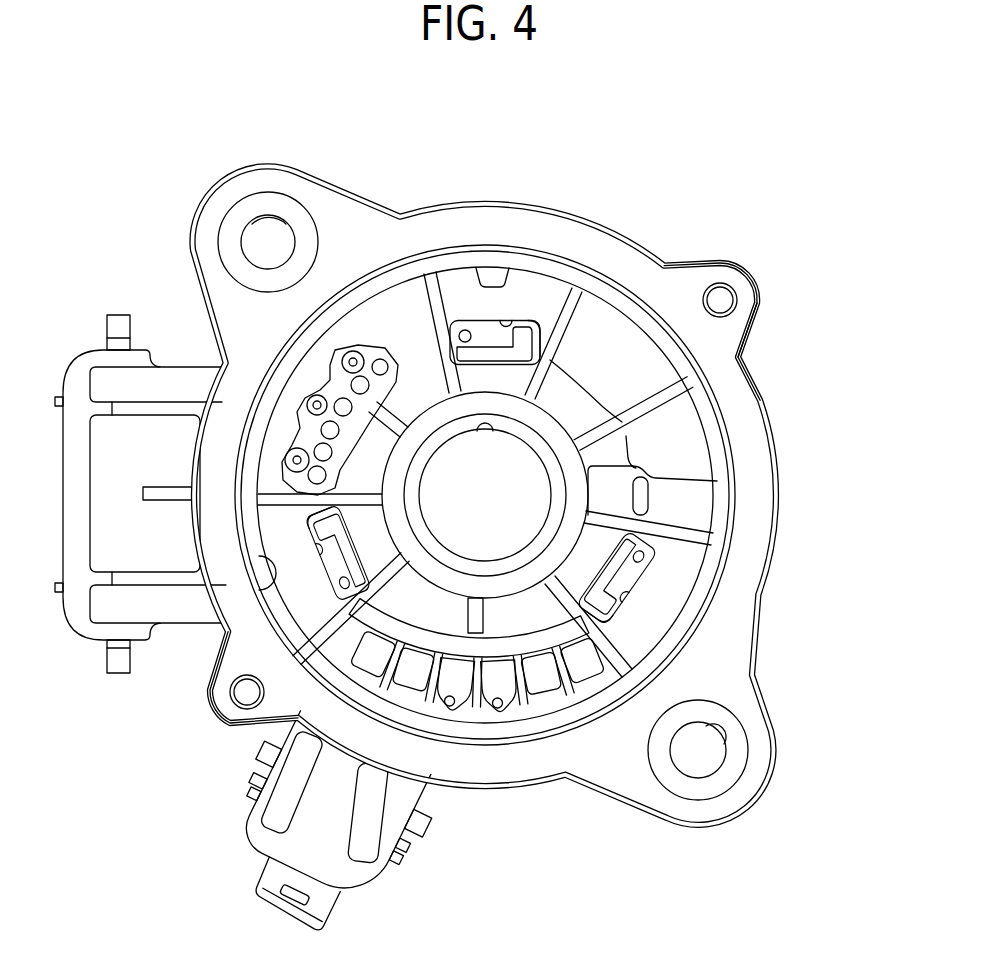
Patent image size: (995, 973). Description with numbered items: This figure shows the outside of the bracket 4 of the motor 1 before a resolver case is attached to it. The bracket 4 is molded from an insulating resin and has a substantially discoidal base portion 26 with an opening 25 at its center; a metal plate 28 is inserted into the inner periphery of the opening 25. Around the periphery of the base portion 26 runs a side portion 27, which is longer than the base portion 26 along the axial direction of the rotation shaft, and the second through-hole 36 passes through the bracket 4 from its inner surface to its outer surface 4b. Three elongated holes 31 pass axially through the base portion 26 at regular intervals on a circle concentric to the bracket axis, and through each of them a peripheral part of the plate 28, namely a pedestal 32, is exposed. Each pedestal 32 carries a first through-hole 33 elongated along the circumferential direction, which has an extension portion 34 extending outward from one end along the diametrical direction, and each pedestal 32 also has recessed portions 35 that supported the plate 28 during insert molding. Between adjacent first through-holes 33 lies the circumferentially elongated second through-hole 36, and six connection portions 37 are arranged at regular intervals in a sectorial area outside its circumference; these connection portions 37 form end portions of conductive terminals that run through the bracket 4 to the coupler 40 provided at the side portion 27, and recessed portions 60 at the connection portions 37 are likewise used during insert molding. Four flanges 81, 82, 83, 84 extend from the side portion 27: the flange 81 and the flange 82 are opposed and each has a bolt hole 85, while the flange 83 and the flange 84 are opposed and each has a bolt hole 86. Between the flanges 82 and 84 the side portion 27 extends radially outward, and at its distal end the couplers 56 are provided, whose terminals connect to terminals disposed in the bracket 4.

The motor 1 is at (455, 532).
The bracket 4 is at (498, 504).
The outer surface 4b is at (667, 378).
The opening 25 is at (485, 495).
The base portion 26 is at (307, 377).
The side portion 27 is at (780, 444).
The metal plate 28 is at (558, 479).
The elongated holes 31 is at (512, 325).
The pedestals 32 is at (493, 330).
The first through-holes 33 is at (450, 333).
The extension portion 34 is at (542, 320).
The recessed portions 35 is at (466, 330).
The second through-hole 36 is at (428, 642).
The connection portions 37 is at (396, 688).
The coupler 40 is at (350, 880).
The couplers 56 is at (73, 603).
The recessed portions 60 is at (500, 709).
The flange 81 is at (687, 807).
The flange 82 is at (271, 180).
The flange 83 is at (763, 292).
The flange 84 is at (220, 693).
The bolt holes 85 is at (283, 220).
The bolt holes 86 is at (723, 291).